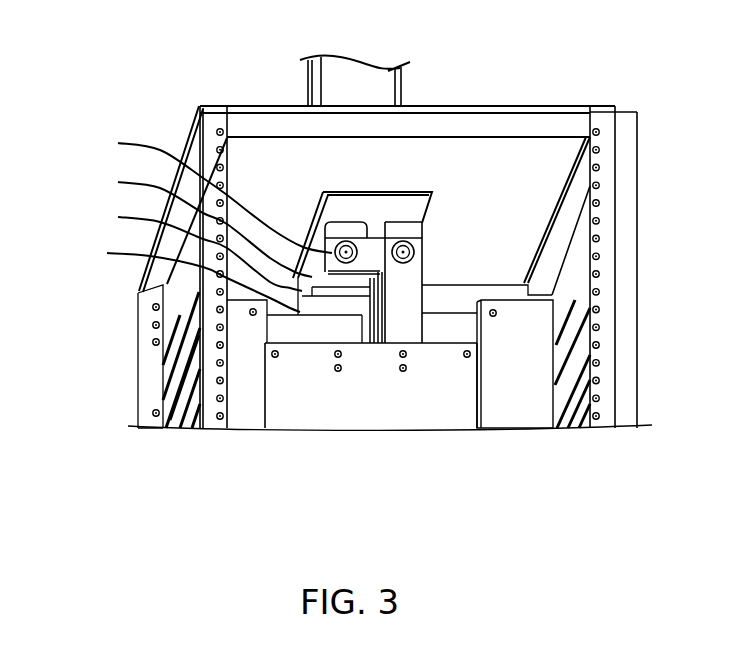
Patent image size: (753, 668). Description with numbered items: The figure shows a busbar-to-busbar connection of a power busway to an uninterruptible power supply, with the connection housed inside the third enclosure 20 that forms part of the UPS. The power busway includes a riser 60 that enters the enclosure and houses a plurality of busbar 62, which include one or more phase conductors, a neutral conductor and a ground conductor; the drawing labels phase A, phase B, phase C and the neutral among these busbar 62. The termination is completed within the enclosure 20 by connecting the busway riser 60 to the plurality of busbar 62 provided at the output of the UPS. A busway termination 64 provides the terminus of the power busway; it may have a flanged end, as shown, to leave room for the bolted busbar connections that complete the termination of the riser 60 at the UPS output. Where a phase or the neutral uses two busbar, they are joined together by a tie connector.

The third enclosure 20 is at (638, 199).
The riser 60 is at (358, 58).
The busbar 62 is at (71, 133).
The busway termination 64 is at (375, 215).